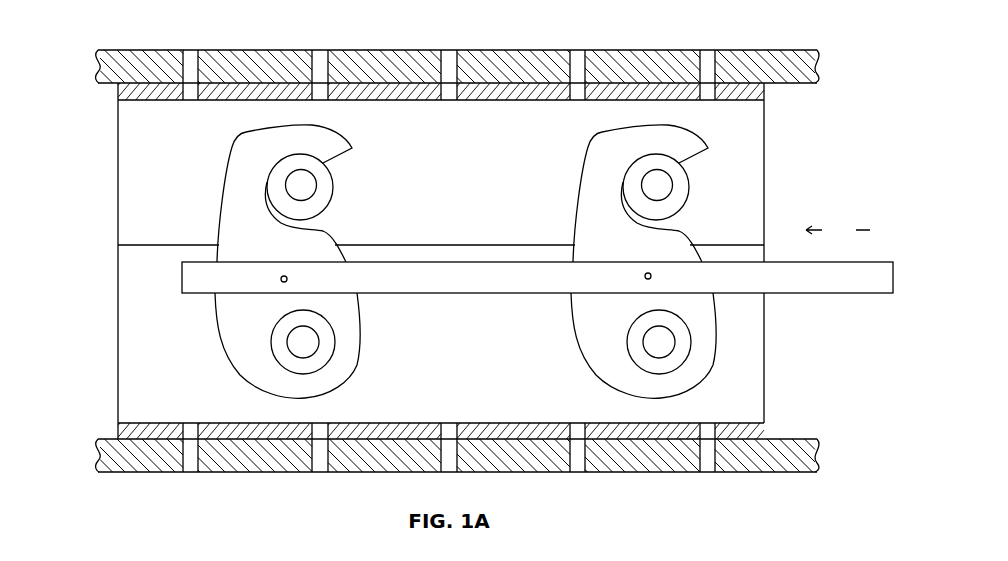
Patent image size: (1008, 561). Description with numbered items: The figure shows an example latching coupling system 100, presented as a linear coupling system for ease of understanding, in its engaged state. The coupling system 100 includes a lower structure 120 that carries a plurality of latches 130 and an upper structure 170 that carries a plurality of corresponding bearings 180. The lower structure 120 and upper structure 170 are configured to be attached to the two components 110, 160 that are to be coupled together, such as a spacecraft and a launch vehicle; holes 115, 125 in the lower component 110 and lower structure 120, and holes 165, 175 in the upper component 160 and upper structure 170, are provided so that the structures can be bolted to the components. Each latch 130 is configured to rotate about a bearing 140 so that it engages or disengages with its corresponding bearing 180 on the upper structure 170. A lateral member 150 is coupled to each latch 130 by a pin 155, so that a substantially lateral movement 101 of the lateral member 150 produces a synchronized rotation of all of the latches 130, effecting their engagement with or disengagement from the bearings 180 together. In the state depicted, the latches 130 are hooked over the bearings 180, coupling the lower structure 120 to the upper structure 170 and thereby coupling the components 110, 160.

The coupling system 100 is at (473, 253).
The lateral movement 101 is at (838, 231).
The component 110 is at (112, 473).
The hole 115 is at (192, 465).
The lower structure 120 is at (116, 340).
The hole 125 is at (192, 430).
The latch 130 is at (257, 357).
The bearing 140 is at (303, 342).
The lateral member 150 is at (418, 295).
The pin 155 is at (278, 281).
The component 160 is at (128, 50).
The hole 165 is at (192, 68).
The upper structure 170 is at (115, 165).
The hole 175 is at (190, 96).
The bearing 180 is at (310, 197).